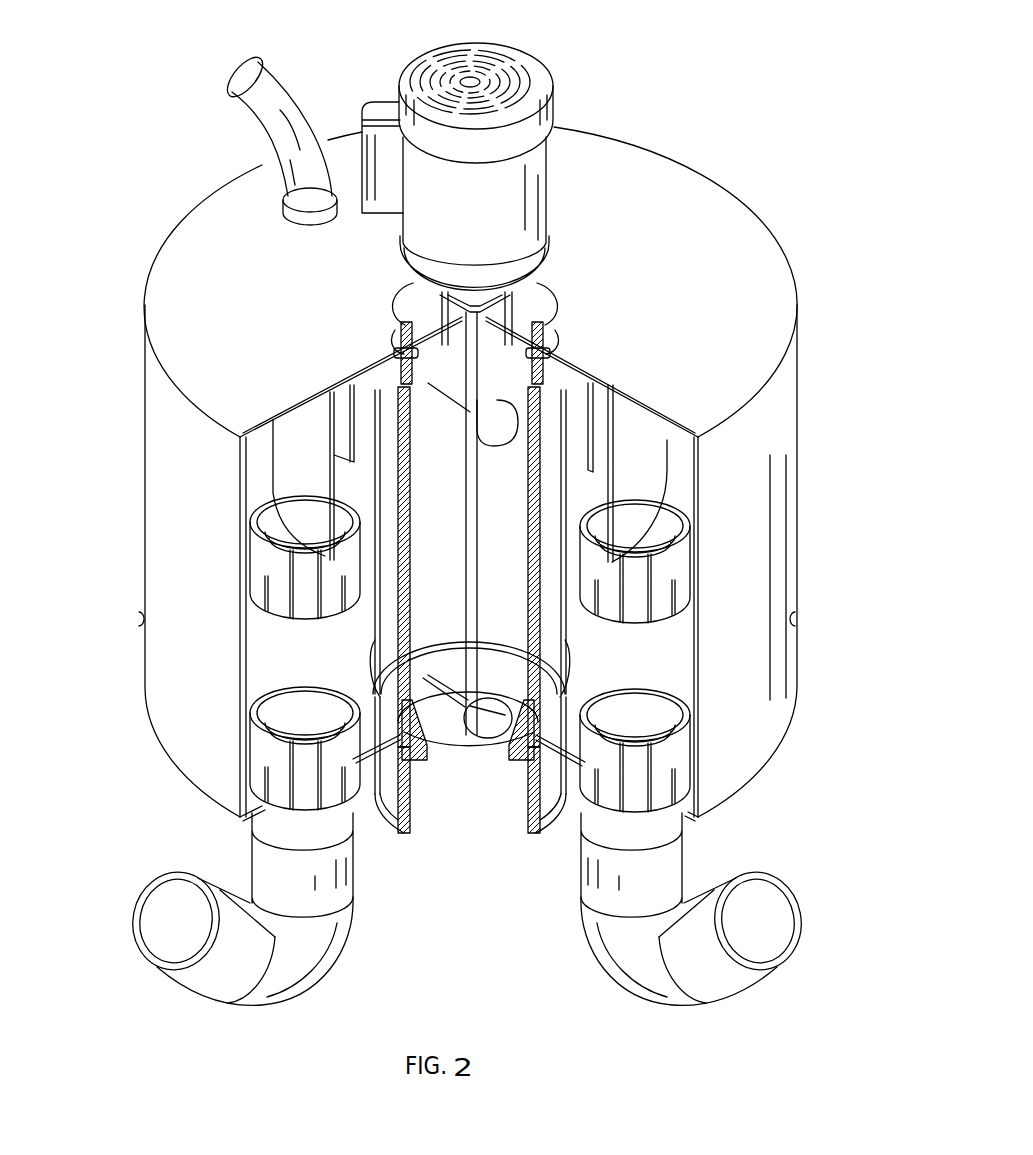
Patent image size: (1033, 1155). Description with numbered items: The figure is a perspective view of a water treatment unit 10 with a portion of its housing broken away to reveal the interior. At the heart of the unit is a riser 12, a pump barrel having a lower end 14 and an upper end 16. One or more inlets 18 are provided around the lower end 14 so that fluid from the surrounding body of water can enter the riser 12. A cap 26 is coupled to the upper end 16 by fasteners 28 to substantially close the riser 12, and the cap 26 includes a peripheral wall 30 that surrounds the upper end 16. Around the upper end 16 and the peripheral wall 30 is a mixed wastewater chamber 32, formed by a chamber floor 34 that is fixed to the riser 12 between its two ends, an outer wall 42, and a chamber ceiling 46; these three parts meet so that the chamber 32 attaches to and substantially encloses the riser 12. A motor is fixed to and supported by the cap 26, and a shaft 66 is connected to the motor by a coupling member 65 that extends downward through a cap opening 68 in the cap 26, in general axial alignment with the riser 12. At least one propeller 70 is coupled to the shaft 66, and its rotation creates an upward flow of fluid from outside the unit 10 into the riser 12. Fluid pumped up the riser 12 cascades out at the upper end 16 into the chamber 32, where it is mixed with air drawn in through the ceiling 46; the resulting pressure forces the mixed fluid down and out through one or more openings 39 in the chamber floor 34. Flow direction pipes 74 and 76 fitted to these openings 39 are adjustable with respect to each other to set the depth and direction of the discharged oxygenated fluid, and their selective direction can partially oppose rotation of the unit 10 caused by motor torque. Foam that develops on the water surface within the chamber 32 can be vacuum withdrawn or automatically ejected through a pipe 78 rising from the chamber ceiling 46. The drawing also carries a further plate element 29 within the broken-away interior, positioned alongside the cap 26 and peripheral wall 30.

The water treatment unit 10 is at (453, 438).
The riser 12 is at (558, 627).
The lower end 14 is at (549, 808).
The upper end 16 is at (540, 480).
The inlets 18 is at (478, 806).
The cap 26 is at (372, 372).
The fasteners 28 is at (548, 350).
The baffle plate 29 is at (385, 410).
The peripheral wall 30 is at (612, 400).
The mixed wastewater chamber 32 is at (278, 630).
The chamber floor 34 is at (673, 665).
The openings 39 is at (301, 738).
The wall 42 is at (165, 531).
The chamber ceiling 46 is at (193, 253).
The coupling member 65 is at (473, 300).
The shaft 66 is at (474, 572).
The cap opening 68 is at (475, 322).
The propeller 70 is at (456, 402).
The flow direction pipe 74 is at (345, 878).
The flow direction pipe 76 is at (215, 967).
The pipe 78 is at (287, 107).